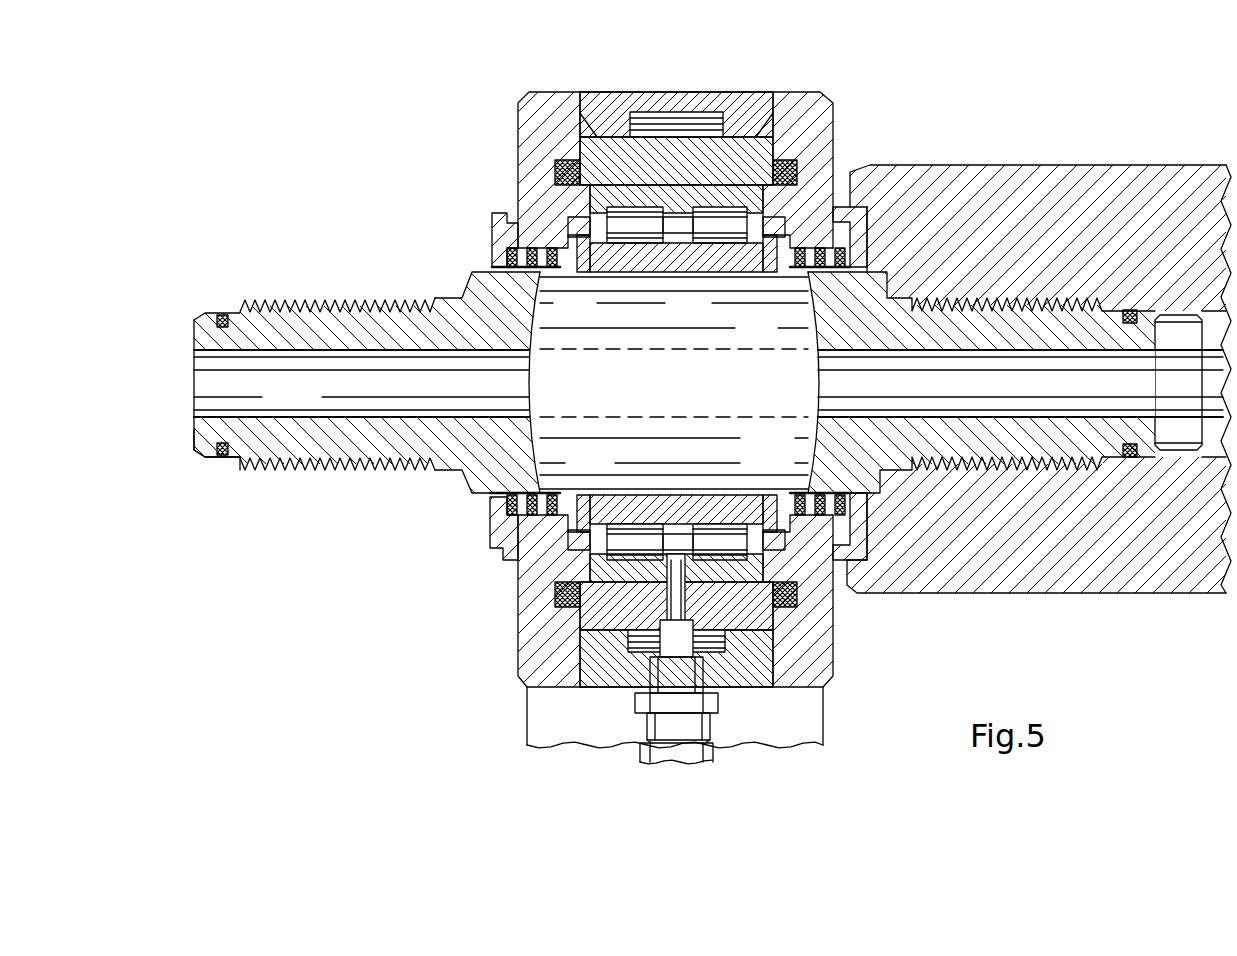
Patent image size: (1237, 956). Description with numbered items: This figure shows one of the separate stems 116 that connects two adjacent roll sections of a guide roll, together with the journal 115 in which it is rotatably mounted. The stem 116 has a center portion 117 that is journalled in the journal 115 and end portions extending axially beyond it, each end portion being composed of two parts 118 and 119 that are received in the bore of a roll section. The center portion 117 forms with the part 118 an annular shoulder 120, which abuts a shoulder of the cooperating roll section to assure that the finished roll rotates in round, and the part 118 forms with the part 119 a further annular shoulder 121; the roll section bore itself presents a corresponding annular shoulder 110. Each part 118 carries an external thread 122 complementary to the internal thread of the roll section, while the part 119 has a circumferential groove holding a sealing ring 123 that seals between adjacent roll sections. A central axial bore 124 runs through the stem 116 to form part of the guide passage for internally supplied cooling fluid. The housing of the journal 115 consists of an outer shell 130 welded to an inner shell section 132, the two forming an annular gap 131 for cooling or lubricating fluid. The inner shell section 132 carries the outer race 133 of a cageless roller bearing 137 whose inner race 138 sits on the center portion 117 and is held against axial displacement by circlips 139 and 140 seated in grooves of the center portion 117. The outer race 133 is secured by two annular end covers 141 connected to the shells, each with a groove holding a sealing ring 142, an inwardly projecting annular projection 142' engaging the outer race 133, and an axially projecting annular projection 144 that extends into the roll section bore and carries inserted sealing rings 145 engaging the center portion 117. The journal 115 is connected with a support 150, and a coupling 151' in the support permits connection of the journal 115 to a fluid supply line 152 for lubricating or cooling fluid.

The annular shoulder 110 is at (860, 523).
The journal 115 is at (518, 113).
The stem 116 is at (540, 318).
The center portion 117 is at (497, 483).
The part of end portion 118 is at (345, 452).
The part of end portion 119 is at (235, 460).
The annular shoulder 120 is at (463, 483).
The annular shoulder 121 is at (267, 467).
The external thread 122 is at (327, 300).
The sealing ring 123 is at (222, 313).
The central axial bore 124 is at (274, 401).
The outer shell 130 is at (533, 670).
The annular gap 131 is at (683, 677).
The inner shell section 132 is at (763, 623).
The outer race 133 is at (707, 200).
The cageless roller bearing 137 is at (745, 265).
The inner race 138 is at (633, 268).
The circlip 139 is at (768, 487).
The circlip 140 is at (585, 497).
The annular end cover 141 is at (523, 140).
The sealing ring 142 is at (668, 399).
The annular projection 142' is at (678, 171).
The annular projection 144 is at (490, 552).
The sealing ring 145 is at (540, 277).
The support 150 is at (530, 707).
The threaded stud 151' is at (728, 721).
The fluid supply line 152 is at (640, 752).